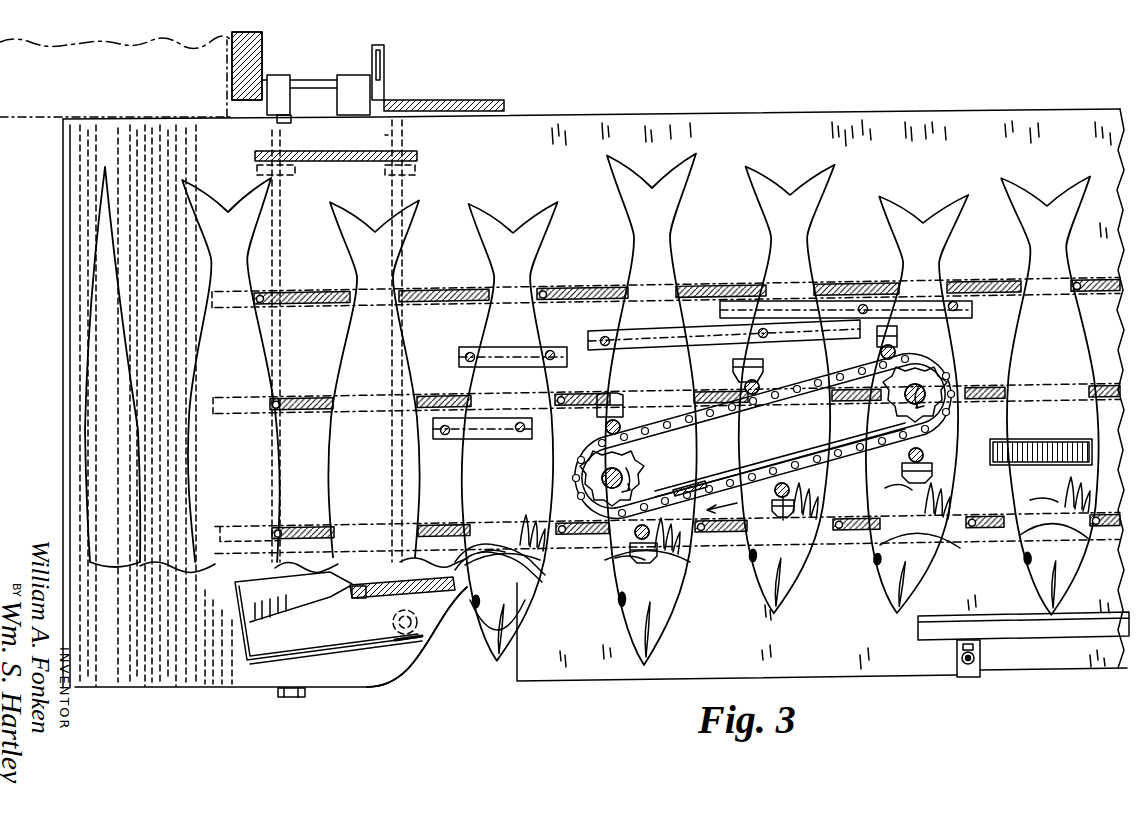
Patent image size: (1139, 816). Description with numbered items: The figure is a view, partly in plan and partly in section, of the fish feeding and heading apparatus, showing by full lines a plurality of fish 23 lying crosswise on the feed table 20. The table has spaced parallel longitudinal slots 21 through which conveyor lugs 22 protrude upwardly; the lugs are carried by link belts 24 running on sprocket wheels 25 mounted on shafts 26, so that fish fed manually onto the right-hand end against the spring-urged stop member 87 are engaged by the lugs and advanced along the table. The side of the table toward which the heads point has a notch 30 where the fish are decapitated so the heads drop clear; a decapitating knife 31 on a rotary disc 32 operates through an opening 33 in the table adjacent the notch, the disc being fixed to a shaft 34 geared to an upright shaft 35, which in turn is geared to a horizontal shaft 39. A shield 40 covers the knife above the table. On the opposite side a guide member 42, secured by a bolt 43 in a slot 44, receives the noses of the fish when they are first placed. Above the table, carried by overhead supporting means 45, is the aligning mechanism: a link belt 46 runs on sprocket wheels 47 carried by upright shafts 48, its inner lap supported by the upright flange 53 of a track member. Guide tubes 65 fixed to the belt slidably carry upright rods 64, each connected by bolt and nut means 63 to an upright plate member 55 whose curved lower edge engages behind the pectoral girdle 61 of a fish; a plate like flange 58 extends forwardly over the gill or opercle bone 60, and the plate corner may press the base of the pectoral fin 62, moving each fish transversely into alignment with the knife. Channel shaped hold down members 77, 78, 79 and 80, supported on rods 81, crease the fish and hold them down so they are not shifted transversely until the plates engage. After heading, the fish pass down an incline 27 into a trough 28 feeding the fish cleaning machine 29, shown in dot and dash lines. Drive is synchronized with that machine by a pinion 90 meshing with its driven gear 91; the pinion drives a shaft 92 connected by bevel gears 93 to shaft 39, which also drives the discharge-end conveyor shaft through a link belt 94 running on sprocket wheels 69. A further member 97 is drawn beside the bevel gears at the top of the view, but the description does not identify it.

The feed table 20 is at (845, 110).
The longitudinal slots 21 is at (298, 303).
The conveyor lugs 22 is at (265, 314).
The fish 23 is at (208, 338).
The link belts 24 is at (450, 306).
The sprocket wheels 25 is at (296, 315).
The shafts 26 is at (280, 228).
The incline 27 is at (160, 255).
The trough 28 is at (80, 236).
The fish cleaning machine 29 is at (30, 114).
The notch 30 is at (478, 670).
The decapitating knife 31 is at (492, 545).
The rotary disc 32 is at (355, 602).
The opening 33 is at (310, 604).
The shaft 34 is at (372, 580).
The upright shaft 35 is at (410, 638).
The horizontal shaft 39 is at (405, 136).
The shield 40 is at (325, 653).
The guide member 42 is at (990, 622).
The bolt 43 is at (980, 656).
The slot 44 is at (957, 656).
The overhead supporting means 45 is at (288, 124).
The link belt 46 is at (803, 460).
The sprocket wheels 47 is at (636, 460).
The upright shafts 48 is at (602, 480).
The upright flange 53 is at (740, 482).
The upright plate member 55 is at (734, 368).
The plate like flange 58 is at (615, 393).
The gill or opercle bone 60 is at (528, 568).
The pectoral girdle 61 is at (490, 556).
The gill or pectoral fin 62 is at (535, 515).
The bolt and nut means 63 is at (782, 518).
The upright rod 64 is at (620, 425).
The guide tube 65 is at (600, 427).
The sprocket wheels 69 is at (257, 170).
The hold down member 77 is at (880, 301).
The hold down member 78 is at (704, 338).
The hold down member 79 is at (512, 352).
The hold down member 80 is at (496, 435).
The rod members 81 is at (522, 432).
The stop member 87 is at (1038, 450).
The pinion 90 is at (232, 92).
The driven gear 91 is at (262, 55).
The shaft 92 is at (313, 80).
The bevel gears 93 is at (385, 85).
The link belt 94 is at (340, 146).
The rail 97 is at (451, 100).